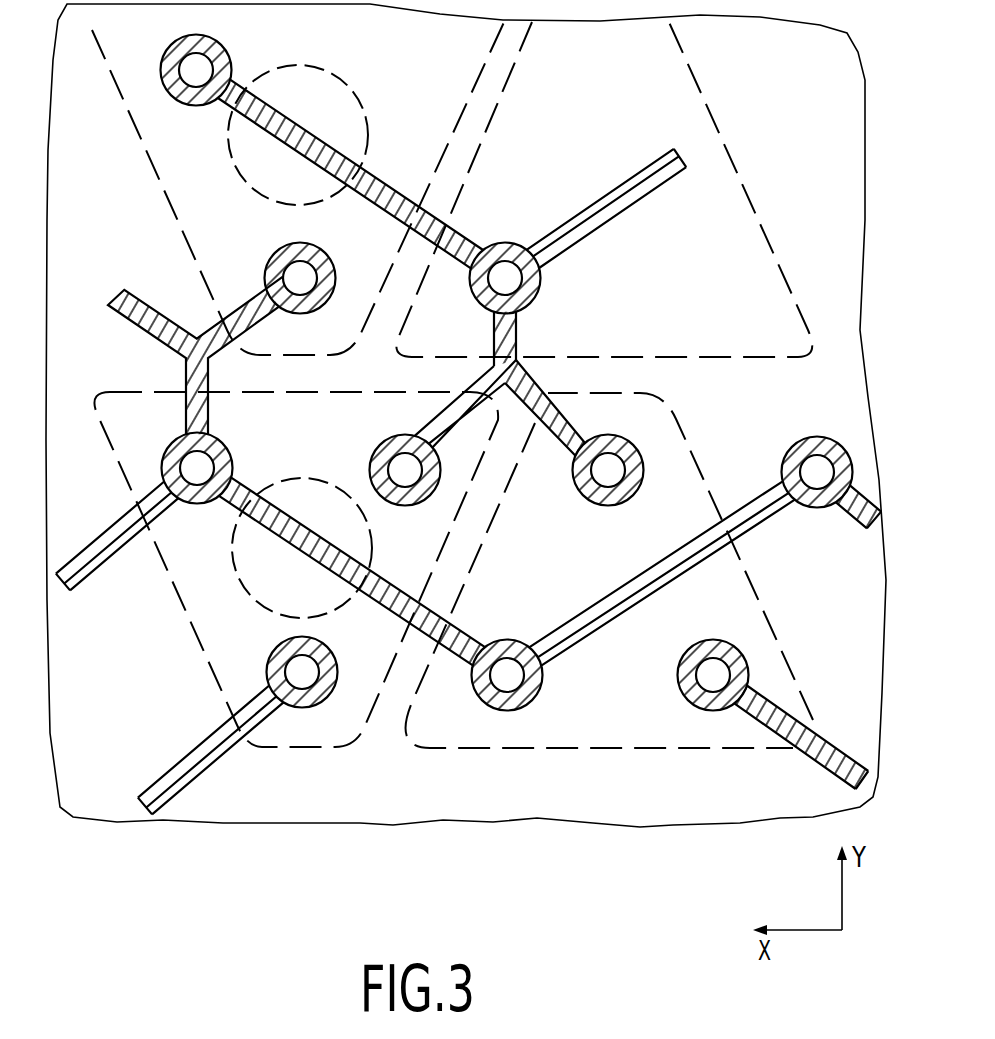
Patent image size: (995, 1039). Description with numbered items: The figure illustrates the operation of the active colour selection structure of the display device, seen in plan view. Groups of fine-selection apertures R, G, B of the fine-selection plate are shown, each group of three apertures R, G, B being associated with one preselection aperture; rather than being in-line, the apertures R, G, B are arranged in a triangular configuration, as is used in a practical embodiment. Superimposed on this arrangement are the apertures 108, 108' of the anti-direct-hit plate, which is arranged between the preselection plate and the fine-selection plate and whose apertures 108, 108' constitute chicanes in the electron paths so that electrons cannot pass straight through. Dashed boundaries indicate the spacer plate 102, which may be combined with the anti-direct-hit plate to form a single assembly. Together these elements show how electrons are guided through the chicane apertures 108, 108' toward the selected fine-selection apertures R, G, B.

The spacer plate 102 is at (138, 130).
The aperture 108 is at (299, 124).
The aperture 108' is at (302, 530).
The fine-selection aperture R is at (200, 67).
The fine-selection aperture G is at (400, 468).
The fine-selection aperture B is at (295, 274).